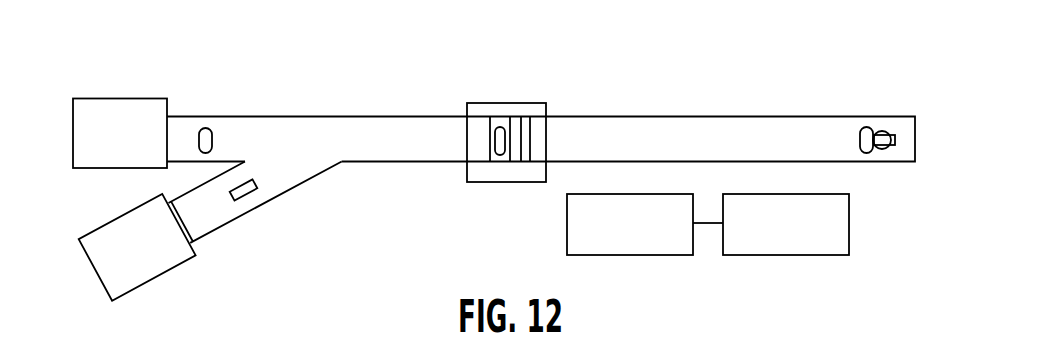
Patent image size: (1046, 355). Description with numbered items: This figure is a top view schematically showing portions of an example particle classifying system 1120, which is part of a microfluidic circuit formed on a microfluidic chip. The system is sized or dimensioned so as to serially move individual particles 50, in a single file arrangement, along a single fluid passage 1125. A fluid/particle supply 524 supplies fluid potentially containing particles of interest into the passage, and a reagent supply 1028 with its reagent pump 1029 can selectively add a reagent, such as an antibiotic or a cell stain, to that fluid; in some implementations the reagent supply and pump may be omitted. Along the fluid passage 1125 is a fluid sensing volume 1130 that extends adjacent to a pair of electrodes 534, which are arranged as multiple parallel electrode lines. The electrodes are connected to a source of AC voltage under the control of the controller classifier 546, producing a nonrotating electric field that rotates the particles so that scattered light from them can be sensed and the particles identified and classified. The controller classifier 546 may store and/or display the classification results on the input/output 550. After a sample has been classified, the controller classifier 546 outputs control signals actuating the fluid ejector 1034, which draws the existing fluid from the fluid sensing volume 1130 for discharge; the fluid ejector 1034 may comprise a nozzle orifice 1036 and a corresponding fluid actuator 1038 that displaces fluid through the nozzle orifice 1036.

The particle classifying system 1120 is at (187, 77).
The fluid/particle supply 524 is at (100, 169).
The particles 50 is at (212, 138).
The fluid passage 1125 is at (658, 116).
The reagent supply 1028 is at (162, 278).
The reagent pump 1029 is at (247, 198).
The fluid sensing volume 1130 is at (481, 157).
The electrodes 534 is at (523, 158).
The fluid ejector 1034 is at (912, 158).
The nozzle orifice 1036 is at (881, 131).
The fluid actuator 1038 is at (890, 151).
The controller classifier 546 is at (607, 256).
The input/output 550 is at (773, 256).